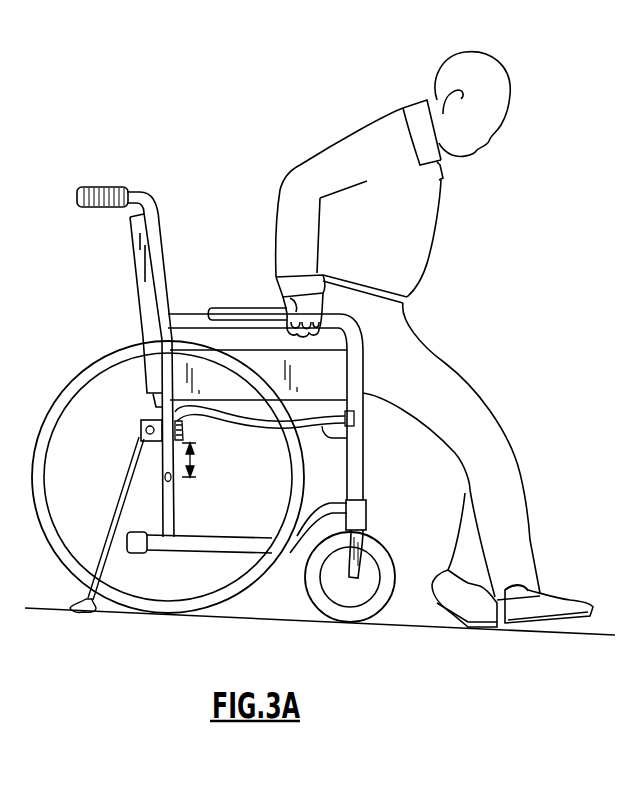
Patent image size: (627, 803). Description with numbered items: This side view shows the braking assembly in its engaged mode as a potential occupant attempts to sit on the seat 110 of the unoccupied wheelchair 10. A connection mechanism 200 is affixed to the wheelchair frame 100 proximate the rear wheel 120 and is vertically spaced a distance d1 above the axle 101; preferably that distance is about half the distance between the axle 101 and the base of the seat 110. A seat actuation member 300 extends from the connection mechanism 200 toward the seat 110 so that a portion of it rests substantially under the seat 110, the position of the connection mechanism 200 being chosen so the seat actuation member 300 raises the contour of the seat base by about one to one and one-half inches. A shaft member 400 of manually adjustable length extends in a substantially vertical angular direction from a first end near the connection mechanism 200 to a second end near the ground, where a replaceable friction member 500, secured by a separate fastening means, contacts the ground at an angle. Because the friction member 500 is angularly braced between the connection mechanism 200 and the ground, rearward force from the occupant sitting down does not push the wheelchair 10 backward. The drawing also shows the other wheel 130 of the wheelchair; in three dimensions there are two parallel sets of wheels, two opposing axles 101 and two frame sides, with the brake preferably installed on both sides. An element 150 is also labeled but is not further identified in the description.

The wheelchair 10 is at (154, 172).
The frame 100 is at (158, 256).
The axle 101 is at (165, 478).
The seat 110 is at (363, 437).
The rear wheel 120 is at (183, 605).
The wheel 130 is at (382, 556).
The actuator lever 150 is at (147, 290).
The connection mechanism 200 is at (142, 428).
The seat actuation member 300 is at (190, 418).
The shaft member 400 is at (118, 522).
The friction member 500 is at (85, 613).
The distance d1 is at (190, 450).